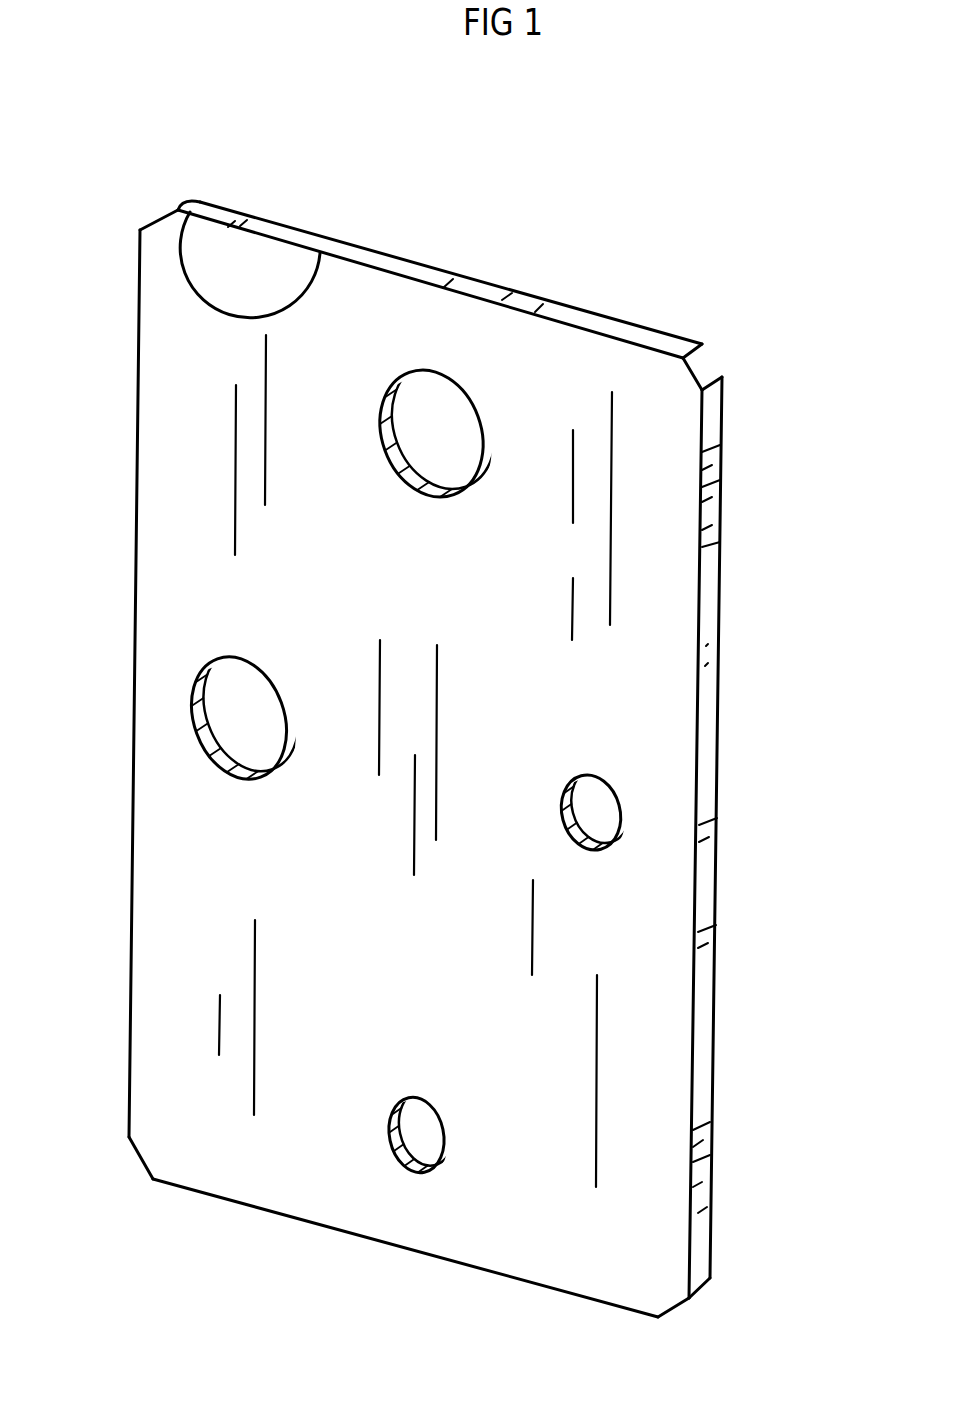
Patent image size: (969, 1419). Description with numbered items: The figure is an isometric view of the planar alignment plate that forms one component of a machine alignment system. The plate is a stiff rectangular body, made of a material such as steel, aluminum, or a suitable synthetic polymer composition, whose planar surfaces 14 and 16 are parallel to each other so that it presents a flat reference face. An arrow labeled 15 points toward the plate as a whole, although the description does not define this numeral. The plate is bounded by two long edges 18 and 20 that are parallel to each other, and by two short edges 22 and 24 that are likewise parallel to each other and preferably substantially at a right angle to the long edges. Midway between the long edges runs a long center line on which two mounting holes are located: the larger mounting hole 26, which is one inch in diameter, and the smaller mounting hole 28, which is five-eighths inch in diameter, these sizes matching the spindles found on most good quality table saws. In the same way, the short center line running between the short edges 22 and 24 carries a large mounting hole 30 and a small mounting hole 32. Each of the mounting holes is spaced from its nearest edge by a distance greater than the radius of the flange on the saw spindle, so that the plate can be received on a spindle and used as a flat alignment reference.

The planar surface 14 is at (192, 212).
The plate 15 is at (752, 287).
The planar surface 16 is at (365, 248).
The long edge 18 is at (135, 603).
The long edge 20 is at (717, 732).
The short edge 22 is at (592, 307).
The short edge 24 is at (290, 1217).
The large mounting hole 26 is at (472, 405).
The small mounting hole 28 is at (445, 1135).
The large mounting hole 30 is at (270, 678).
The small mounting hole 32 is at (562, 815).